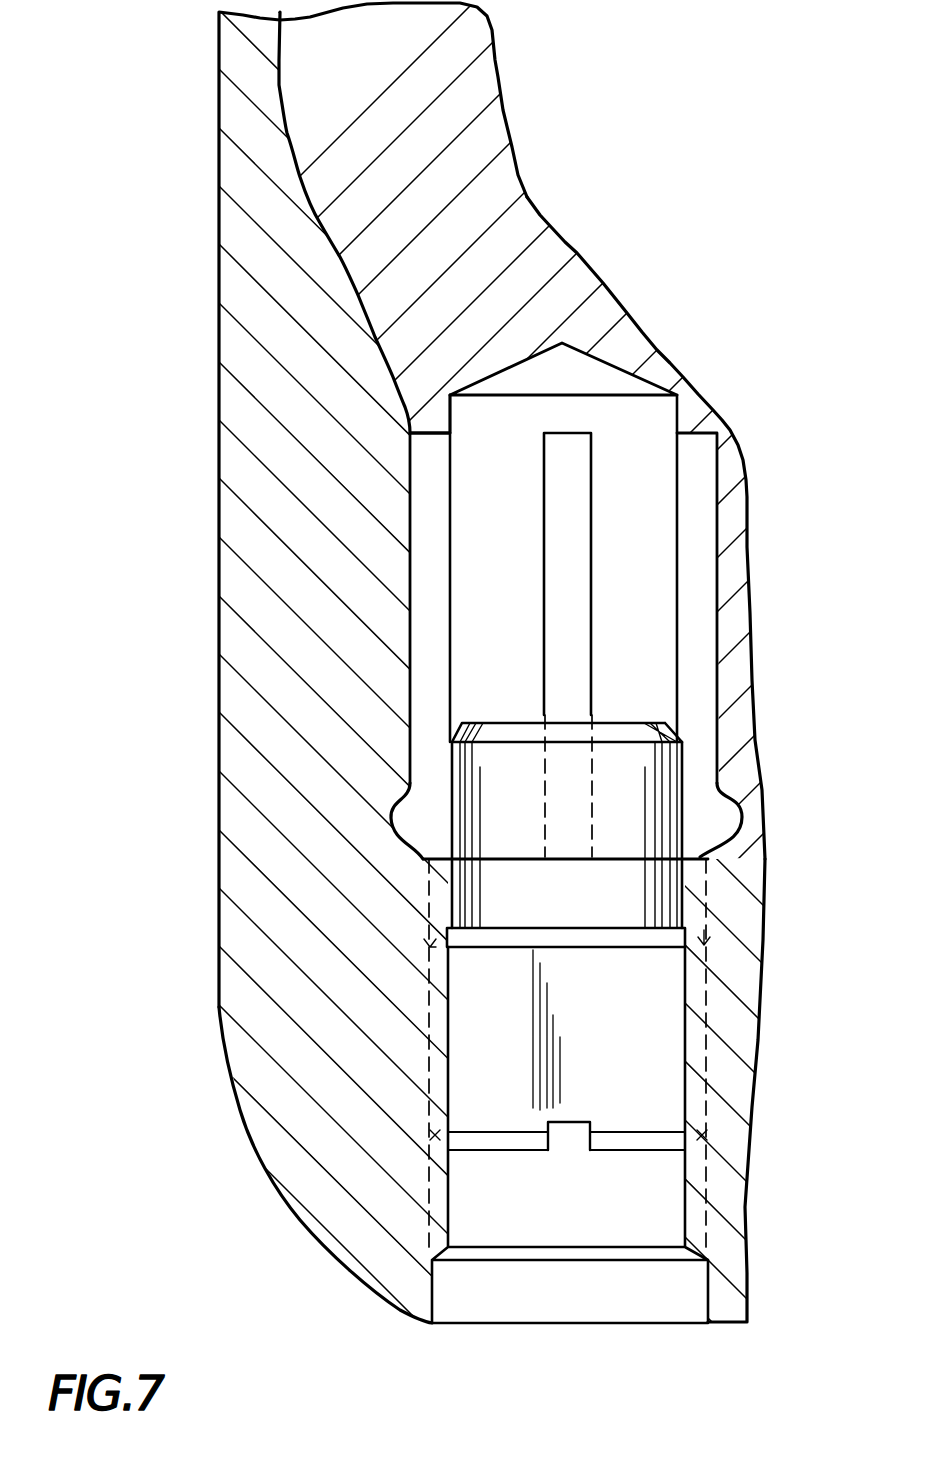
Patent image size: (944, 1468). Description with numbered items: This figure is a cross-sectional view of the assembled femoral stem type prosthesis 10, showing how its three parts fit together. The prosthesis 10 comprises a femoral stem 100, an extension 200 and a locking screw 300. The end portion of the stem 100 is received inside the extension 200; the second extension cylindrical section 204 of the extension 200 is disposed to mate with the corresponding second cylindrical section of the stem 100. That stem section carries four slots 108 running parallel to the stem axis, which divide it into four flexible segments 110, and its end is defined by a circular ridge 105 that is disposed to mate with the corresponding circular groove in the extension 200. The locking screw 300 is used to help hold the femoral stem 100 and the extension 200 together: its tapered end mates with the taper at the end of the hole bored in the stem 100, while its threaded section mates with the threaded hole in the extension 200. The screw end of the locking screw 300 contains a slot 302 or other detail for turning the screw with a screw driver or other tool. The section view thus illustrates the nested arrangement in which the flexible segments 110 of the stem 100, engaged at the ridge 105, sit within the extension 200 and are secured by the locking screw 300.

The prosthesis 10 is at (142, 314).
The femoral stem 100 is at (287, 140).
The extension 200 is at (283, 57).
The second extension cylindrical section 204 is at (416, 532).
The slots 108 is at (548, 578).
The flexible segments 110 is at (428, 663).
The circular ridge 105 is at (742, 812).
The locking screw 300 is at (458, 1117).
The slot 302 is at (588, 1137).